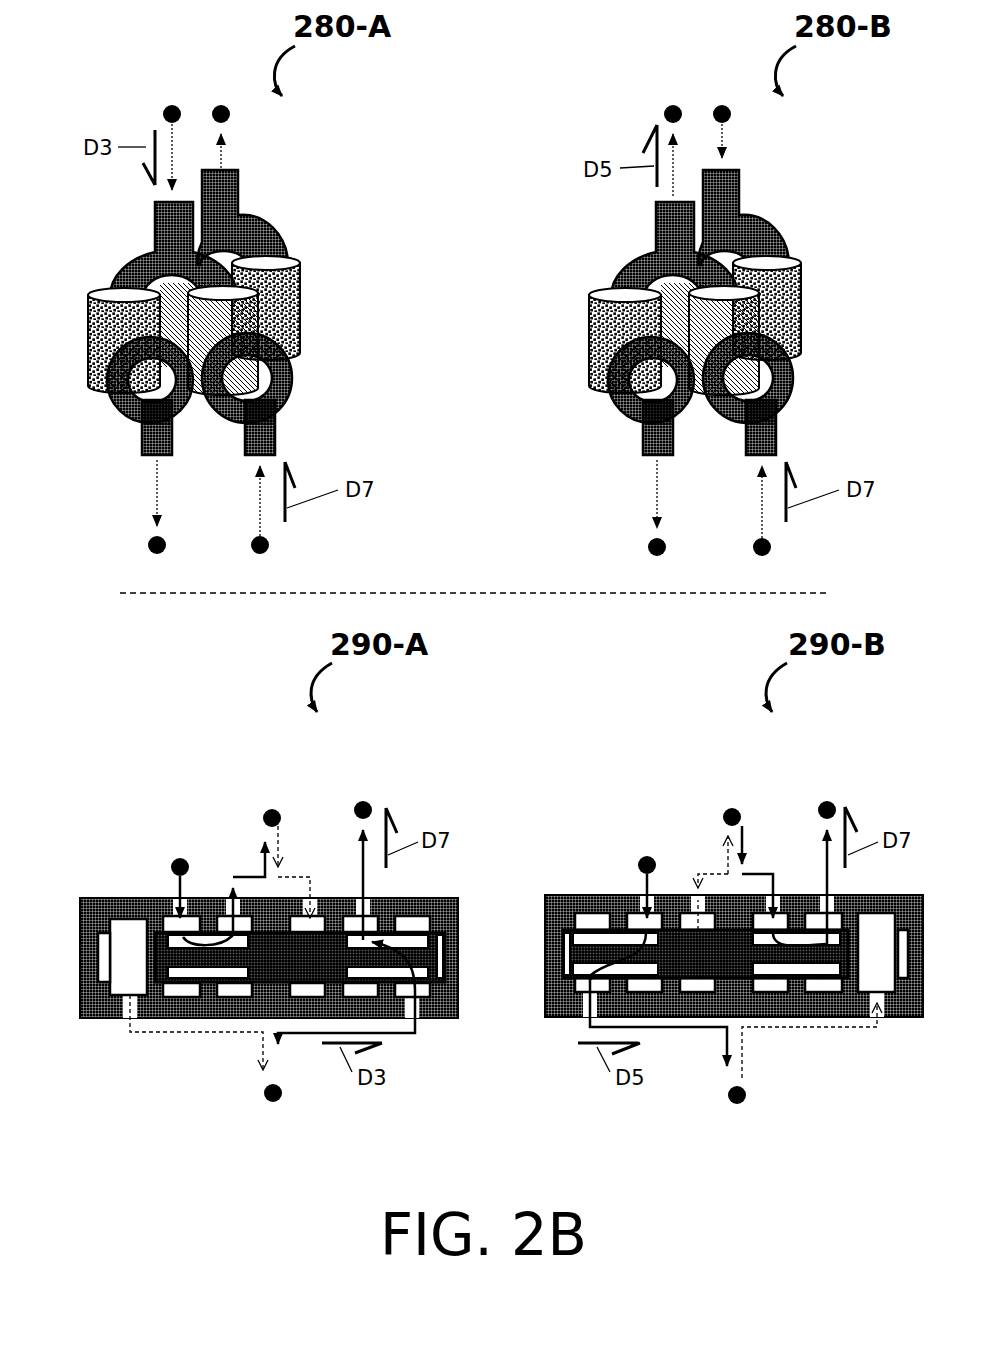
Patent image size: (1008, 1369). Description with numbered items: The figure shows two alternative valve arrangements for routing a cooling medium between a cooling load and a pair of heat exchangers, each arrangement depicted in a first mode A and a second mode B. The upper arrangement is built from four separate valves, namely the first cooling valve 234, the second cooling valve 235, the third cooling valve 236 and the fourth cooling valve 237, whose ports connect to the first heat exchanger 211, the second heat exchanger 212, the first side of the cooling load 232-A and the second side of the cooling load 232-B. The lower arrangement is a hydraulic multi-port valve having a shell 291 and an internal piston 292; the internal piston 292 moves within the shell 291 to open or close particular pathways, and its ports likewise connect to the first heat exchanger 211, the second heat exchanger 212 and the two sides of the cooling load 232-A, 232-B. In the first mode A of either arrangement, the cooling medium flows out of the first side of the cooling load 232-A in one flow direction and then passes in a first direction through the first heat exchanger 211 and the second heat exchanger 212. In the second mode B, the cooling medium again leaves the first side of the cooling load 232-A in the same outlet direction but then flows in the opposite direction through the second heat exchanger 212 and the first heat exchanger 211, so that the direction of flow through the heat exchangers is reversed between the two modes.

The first heat exchanger 211 is at (230, 114).
The second heat exchanger 212 is at (162, 112).
The first side of the cooling load 232-A is at (270, 547).
The second side of the cooling load 232-B is at (148, 542).
The first cooling valve 234 is at (177, 372).
The second cooling valve 235 is at (302, 283).
The third cooling valve 236 is at (92, 385).
The fourth cooling valve 237 is at (266, 352).
The shell 291 is at (103, 897).
The internal piston 292 is at (155, 957).